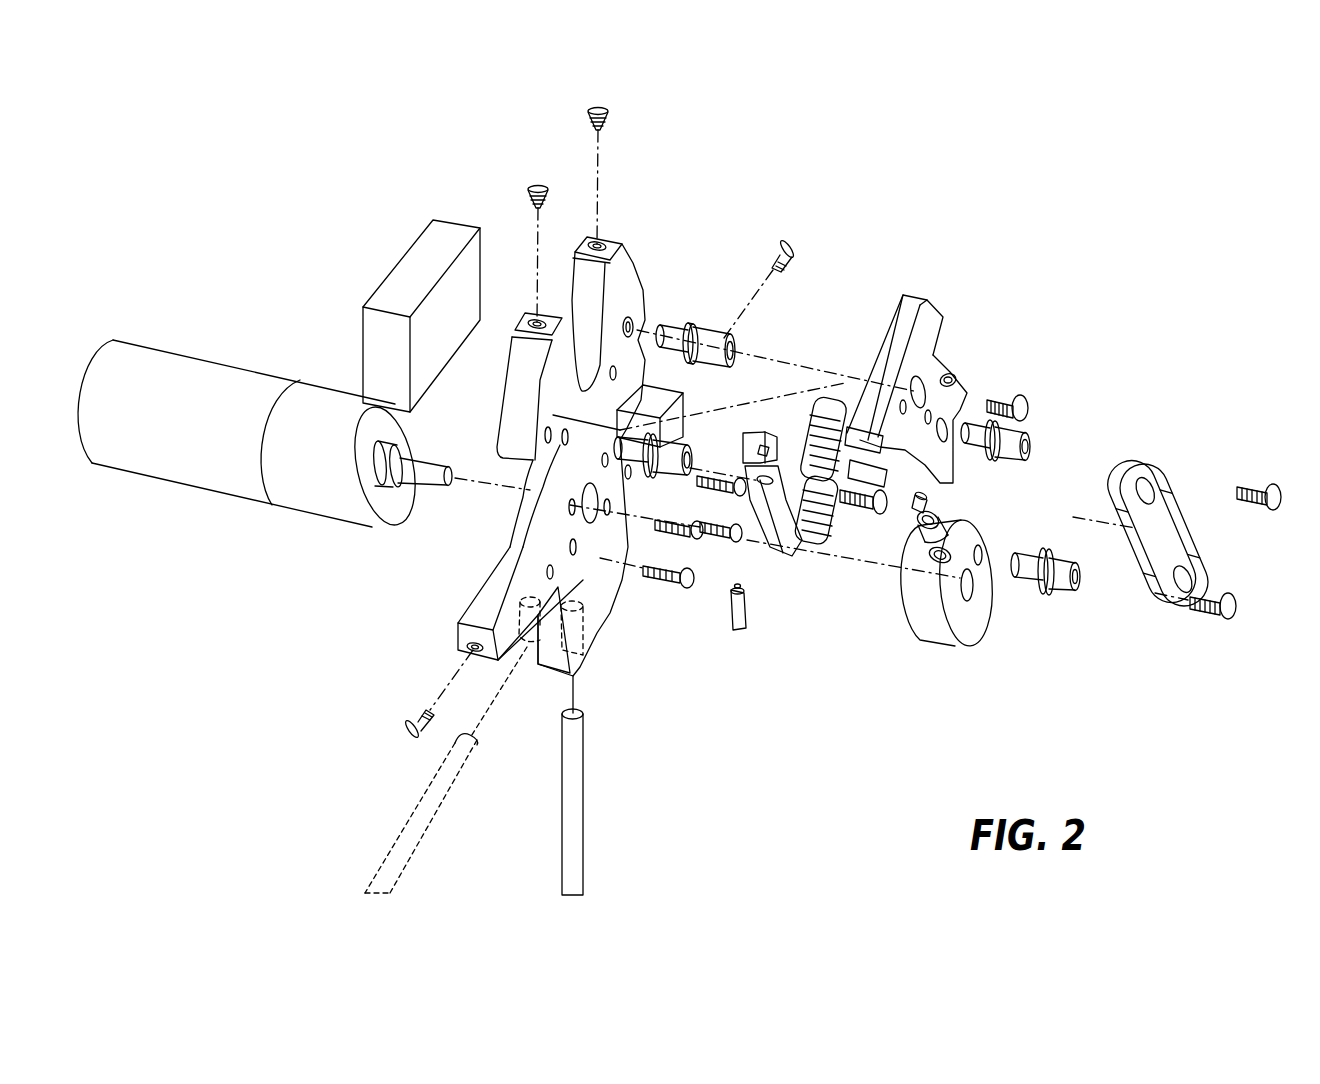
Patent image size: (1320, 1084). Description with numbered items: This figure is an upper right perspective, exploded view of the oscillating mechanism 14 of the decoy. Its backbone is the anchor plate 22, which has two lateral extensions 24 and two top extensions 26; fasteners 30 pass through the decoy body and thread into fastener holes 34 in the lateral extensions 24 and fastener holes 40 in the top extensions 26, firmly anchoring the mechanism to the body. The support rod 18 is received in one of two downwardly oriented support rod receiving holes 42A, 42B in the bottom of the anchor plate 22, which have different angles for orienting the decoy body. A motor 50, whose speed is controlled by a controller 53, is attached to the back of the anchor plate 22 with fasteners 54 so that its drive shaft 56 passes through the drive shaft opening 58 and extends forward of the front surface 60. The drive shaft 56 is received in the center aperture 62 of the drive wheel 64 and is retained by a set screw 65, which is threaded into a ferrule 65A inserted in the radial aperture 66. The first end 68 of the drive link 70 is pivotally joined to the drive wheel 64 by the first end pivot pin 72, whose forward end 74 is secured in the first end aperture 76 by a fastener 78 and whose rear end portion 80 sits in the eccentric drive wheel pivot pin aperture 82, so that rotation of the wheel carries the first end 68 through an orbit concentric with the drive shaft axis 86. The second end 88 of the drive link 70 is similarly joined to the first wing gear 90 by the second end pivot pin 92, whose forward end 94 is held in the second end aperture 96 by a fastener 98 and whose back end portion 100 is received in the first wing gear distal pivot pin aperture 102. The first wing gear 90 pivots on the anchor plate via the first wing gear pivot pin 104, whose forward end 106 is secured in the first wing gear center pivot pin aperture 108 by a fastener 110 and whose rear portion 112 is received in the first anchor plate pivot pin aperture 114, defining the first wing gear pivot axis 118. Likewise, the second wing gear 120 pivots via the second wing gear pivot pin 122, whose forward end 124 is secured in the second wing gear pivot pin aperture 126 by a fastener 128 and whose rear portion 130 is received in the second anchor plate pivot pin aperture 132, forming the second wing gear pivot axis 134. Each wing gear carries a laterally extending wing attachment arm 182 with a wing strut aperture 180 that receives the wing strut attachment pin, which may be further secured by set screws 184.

The oscillating mechanism 14 is at (425, 160).
The support rod 18 is at (412, 860).
The anchor plate 22 is at (613, 600).
The lateral extensions 24 is at (500, 560).
The top extensions 26 is at (513, 397).
The fasteners 30 is at (545, 190).
The fastener holes 34 is at (465, 645).
The fastener holes 40 is at (535, 318).
The support rod receiving hole 42A is at (525, 670).
The support rod receiving hole 42B is at (600, 670).
The motor 50 is at (215, 495).
The controller 53 is at (413, 258).
The fasteners 54 is at (720, 580).
The drive shaft 56 is at (428, 485).
The drive shaft opening 58 is at (615, 565).
The front surface 60 is at (600, 640).
The center aperture 62 is at (970, 600).
The drive wheel 64 is at (940, 640).
The set screw 65 is at (920, 572).
The ferrule 65A is at (918, 533).
The radial aperture 66 is at (930, 560).
The first end 68 is at (1135, 625).
The drive link 70 is at (1142, 500).
The first end pivot pin 72 is at (1045, 545).
The forward end 74 is at (1058, 595).
The first end aperture 76 is at (1148, 585).
The fastener 78 is at (1240, 612).
The rear end portion 80 is at (1012, 580).
The drive wheel pivot pin aperture 82 is at (985, 550).
The drive shaft axis 86 is at (875, 535).
The second end 88 is at (1200, 448).
The first wing gear 90 is at (935, 335).
The second end pivot pin 92 is at (1000, 455).
The forward end 94 is at (1030, 440).
The second end aperture 96 is at (1195, 478).
The fastener 98 is at (1265, 508).
The back end portion 100 is at (970, 440).
The first wing gear distal pivot pin aperture 102 is at (945, 440).
The first wing gear pivot pin 104 is at (700, 322).
The forward end 106 is at (740, 335).
The first wing gear center pivot pin aperture 108 is at (918, 385).
The fastener 110 is at (1025, 400).
The rear portion 112 is at (672, 322).
The first anchor plate pivot pin aperture 114 is at (640, 300).
The first wing gear pivot axis 118 is at (787, 363).
The second wing gear 120 is at (780, 515).
The second wing gear pivot pin 122 is at (640, 470).
The forward end 124 is at (765, 490).
The second wing gear pivot pin aperture 126 is at (800, 420).
The fastener 128 is at (885, 515).
The rear portion 130 is at (630, 520).
The second anchor plate pivot pin aperture 132 is at (548, 440).
The second wing gear pivot axis 134 is at (563, 445).
The wing strut aperture 180 is at (755, 450).
The wing attachment arms 182 is at (920, 300).
The set screws 184 is at (955, 385).